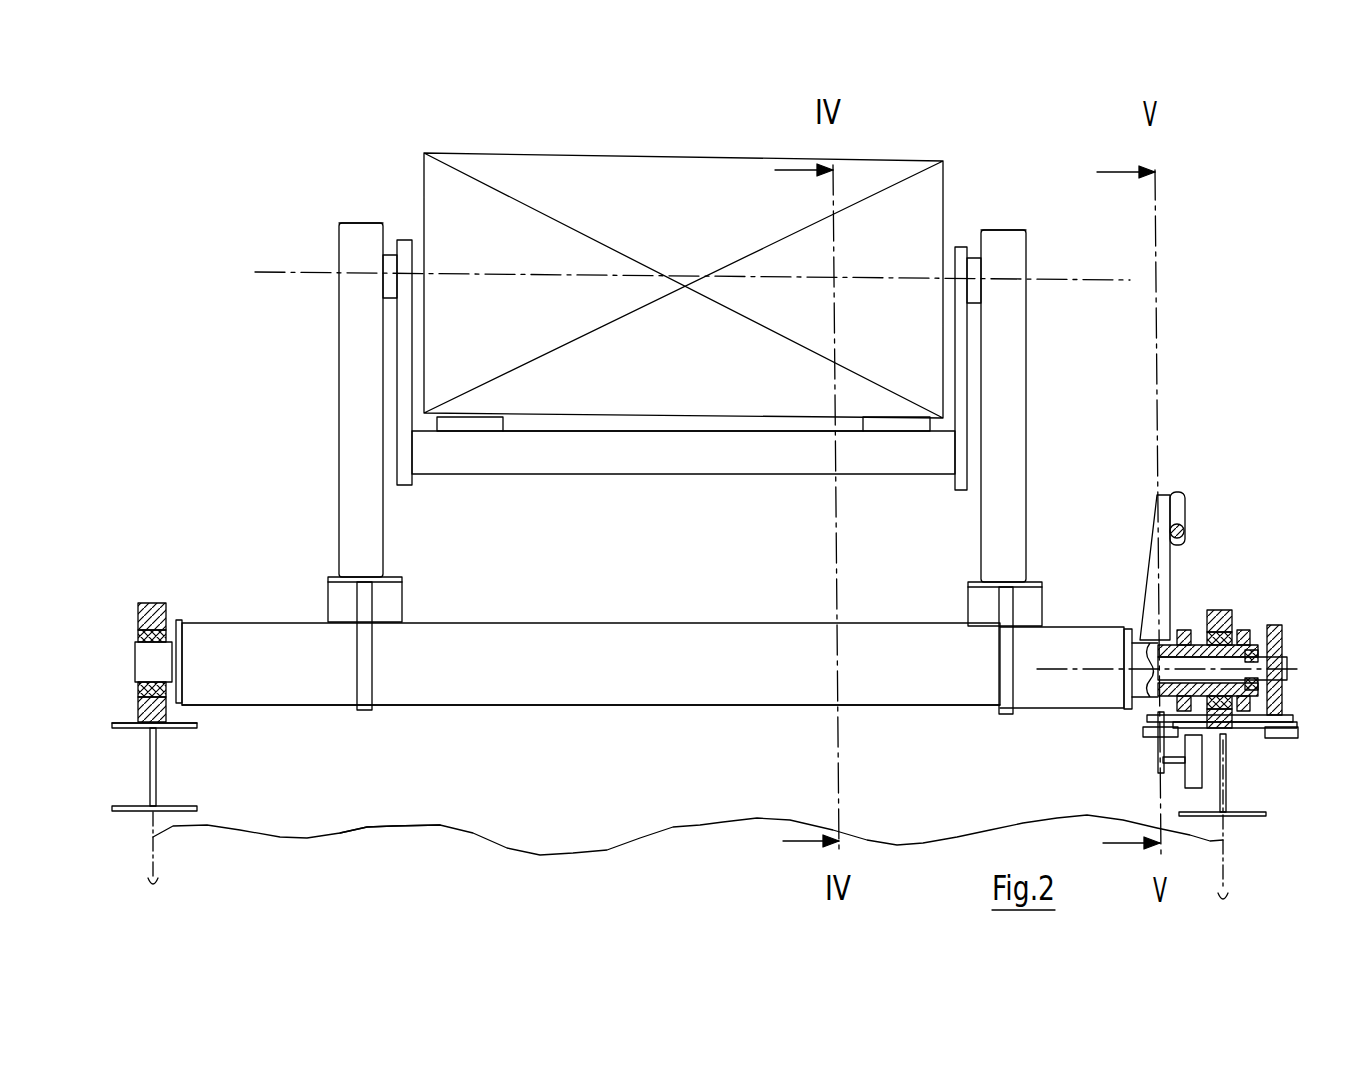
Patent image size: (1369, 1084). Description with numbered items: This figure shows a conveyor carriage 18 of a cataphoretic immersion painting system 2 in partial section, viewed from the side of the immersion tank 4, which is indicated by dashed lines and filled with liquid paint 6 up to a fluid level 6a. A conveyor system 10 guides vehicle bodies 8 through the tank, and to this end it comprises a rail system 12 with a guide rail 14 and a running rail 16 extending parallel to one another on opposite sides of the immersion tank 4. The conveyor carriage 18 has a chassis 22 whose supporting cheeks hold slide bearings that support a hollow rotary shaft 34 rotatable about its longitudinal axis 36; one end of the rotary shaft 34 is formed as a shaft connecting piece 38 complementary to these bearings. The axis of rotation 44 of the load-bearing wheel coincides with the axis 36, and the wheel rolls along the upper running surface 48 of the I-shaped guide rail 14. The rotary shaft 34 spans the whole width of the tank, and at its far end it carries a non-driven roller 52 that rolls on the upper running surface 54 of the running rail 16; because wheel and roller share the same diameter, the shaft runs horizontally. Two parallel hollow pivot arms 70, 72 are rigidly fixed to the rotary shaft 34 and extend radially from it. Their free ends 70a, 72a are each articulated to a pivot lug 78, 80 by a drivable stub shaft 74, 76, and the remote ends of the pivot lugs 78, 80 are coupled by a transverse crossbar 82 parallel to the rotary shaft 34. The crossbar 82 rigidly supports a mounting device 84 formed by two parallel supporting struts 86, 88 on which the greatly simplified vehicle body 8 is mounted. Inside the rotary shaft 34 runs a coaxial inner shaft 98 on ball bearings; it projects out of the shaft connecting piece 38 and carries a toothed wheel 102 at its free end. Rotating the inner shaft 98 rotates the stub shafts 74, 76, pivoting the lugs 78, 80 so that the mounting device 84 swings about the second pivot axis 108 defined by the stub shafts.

The cataphoretic immersion painting system 2 is at (1186, 214).
The immersion tank 4 is at (156, 840).
The liquid paint 6 is at (426, 884).
The fluid level 6a is at (397, 830).
The vehicle body 8 is at (438, 176).
The conveyor system 10 is at (1191, 344).
The rail system 12 is at (125, 834).
The guide rail 14 is at (1228, 773).
The running rail 16 is at (156, 763).
The conveyor carriage 18 is at (630, 740).
The chassis 22 is at (1243, 588).
The rotary shaft 34 is at (724, 618).
The longitudinal axis 36 is at (1060, 670).
The shaft connecting piece 38 is at (1138, 637).
The axis of rotation 44 is at (1115, 680).
The upper running surface 48 is at (1280, 715).
The non-driven roller 52 is at (147, 605).
The upper running surface 54 is at (117, 721).
The pivot arm 70 is at (347, 490).
The free end 70a is at (360, 237).
The pivot arm 72 is at (1000, 562).
The free end 72a is at (997, 248).
The stub shaft 74 is at (390, 262).
The stub shaft 76 is at (975, 262).
The pivot lug 78 is at (403, 358).
The pivot lug 80 is at (960, 390).
The transverse crossbar 82 is at (683, 452).
The mounting device 84 is at (524, 432).
The supporting strut 86 is at (468, 418).
The supporting strut 88 is at (918, 432).
The inner shaft 98 is at (1295, 665).
The toothed wheel 102 is at (1287, 610).
The second pivot axis 108 is at (255, 272).